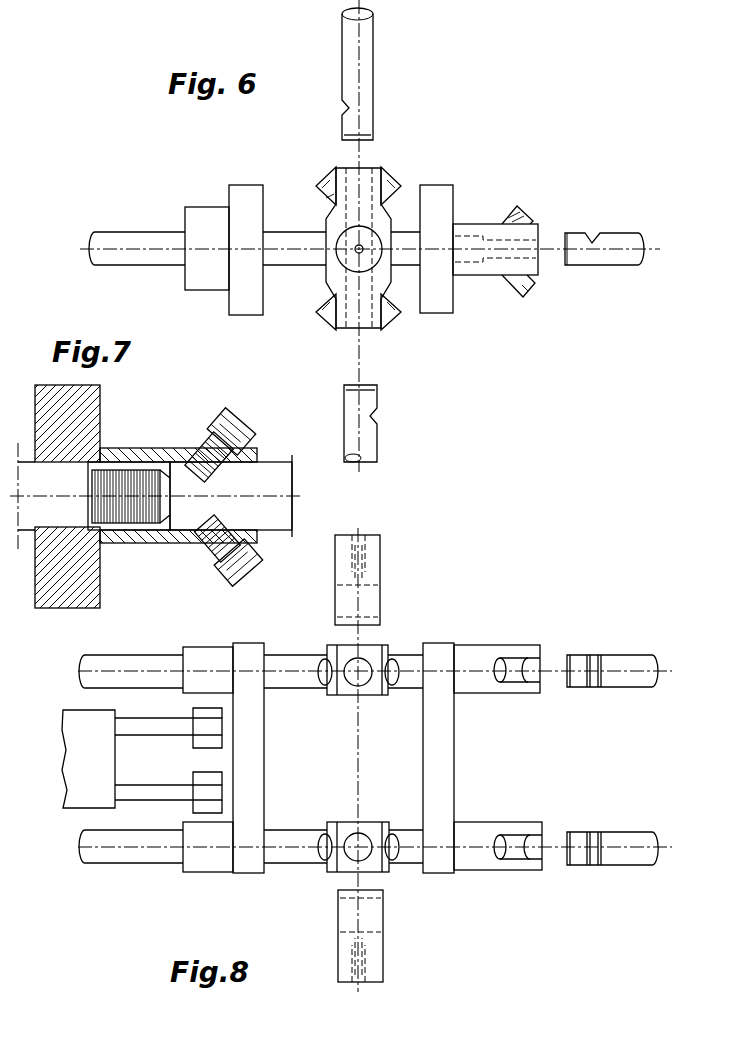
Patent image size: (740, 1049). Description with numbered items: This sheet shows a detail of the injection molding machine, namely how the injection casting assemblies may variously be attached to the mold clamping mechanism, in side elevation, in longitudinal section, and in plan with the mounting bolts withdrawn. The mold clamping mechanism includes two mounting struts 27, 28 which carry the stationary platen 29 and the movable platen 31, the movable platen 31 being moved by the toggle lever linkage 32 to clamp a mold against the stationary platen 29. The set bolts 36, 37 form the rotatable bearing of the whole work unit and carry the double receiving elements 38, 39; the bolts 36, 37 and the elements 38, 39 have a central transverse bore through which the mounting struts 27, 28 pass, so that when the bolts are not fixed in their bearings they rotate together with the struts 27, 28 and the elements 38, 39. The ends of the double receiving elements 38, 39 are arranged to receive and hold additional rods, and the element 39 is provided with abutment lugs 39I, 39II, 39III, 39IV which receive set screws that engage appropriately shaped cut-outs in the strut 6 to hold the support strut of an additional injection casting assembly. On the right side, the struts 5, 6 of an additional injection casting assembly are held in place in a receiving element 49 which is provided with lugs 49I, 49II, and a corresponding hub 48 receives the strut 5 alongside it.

In FIG. 8, the strut 5 is at (626, 652).
In FIG. 6, the strut 6 is at (367, 83).
In FIG. 7, the strut 6 is at (266, 470).
In FIG. 8, the strut 6 is at (614, 866).
In FIG. 8, the mounting strut 27 is at (408, 660).
In FIG. 6, the mounting strut 28 is at (295, 257).
In FIG. 7, the mounting strut 28 is at (70, 447).
In FIG. 8, the mounting strut 28 is at (406, 855).
In FIG. 6, the stationary platen 29 is at (440, 300).
In FIG. 7, the stationary platen 29 is at (80, 592).
In FIG. 8, the stationary platen 29 is at (444, 865).
In FIG. 6, the movable platen 31 is at (217, 278).
In FIG. 8, the movable platen 31 is at (252, 866).
In FIG. 8, the toggle lever linkage 32 is at (75, 797).
In FIG. 8, the set bolt 36 is at (346, 545).
In FIG. 6, the set bolt 37 is at (363, 245).
In FIG. 8, the set bolt 37 is at (350, 972).
In FIG. 8, the double receiving element 38 is at (345, 652).
In FIG. 6, the double receiving element 39 is at (373, 318).
In FIG. 8, the double receiving element 39 is at (345, 865).
In FIG. 6, the abutment lug 39I is at (389, 175).
In FIG. 6, the abutment lug 39II is at (328, 178).
In FIG. 6, the abutment lug 39III is at (335, 318).
In FIG. 6, the abutment lug 39IV is at (395, 308).
In FIG. 8, the hub 48 is at (490, 652).
In FIG. 6, the receiving element 49 is at (508, 268).
In FIG. 7, the receiving element 49 is at (150, 545).
In FIG. 8, the receiving element 49 is at (495, 862).
In FIG. 6, the lug 49I is at (530, 293).
In FIG. 7, the lug 49I is at (240, 556).
In FIG. 6, the lug 49II is at (518, 212).
In FIG. 7, the lug 49II is at (232, 420).